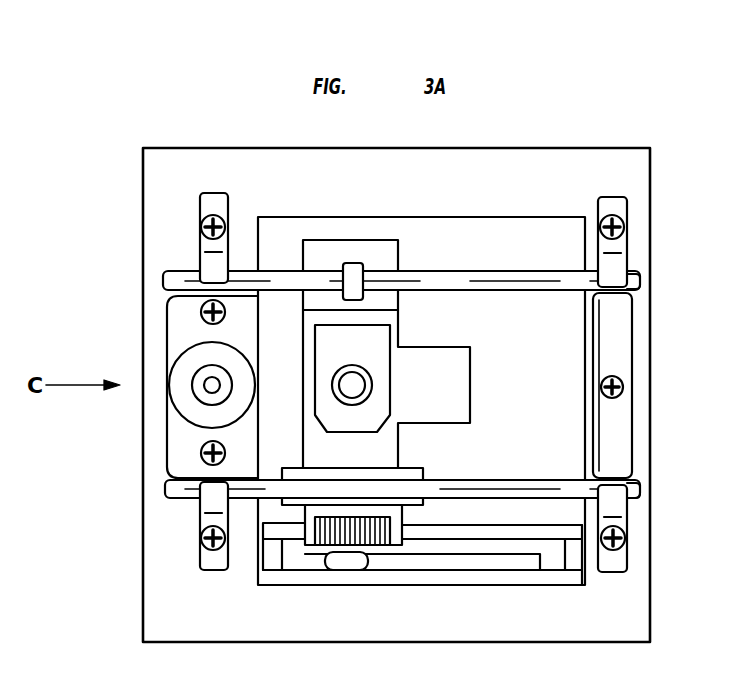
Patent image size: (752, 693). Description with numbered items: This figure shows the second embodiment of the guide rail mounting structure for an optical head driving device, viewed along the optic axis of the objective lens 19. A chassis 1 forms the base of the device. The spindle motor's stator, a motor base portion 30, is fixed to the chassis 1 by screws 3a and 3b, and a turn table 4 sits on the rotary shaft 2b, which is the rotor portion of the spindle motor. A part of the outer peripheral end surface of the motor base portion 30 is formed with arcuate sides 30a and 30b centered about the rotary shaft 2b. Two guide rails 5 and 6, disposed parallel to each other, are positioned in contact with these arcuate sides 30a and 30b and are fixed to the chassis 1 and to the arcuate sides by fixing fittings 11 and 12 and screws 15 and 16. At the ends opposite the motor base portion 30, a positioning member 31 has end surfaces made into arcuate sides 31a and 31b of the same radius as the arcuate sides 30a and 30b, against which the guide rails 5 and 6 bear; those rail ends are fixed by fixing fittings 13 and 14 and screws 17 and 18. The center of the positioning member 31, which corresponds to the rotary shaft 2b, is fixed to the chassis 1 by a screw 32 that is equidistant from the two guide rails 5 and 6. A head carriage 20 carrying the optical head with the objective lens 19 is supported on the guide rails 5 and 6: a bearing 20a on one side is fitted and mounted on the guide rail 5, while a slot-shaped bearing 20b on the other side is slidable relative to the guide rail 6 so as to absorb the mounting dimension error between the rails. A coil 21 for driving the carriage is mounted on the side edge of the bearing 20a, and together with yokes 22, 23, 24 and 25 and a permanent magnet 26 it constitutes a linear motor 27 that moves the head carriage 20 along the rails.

The chassis 1 is at (143, 629).
The rotary shaft 2b is at (205, 393).
The screw 3a is at (207, 462).
The screw 3b is at (230, 303).
The turn table 4 is at (196, 385).
The guide rail 5 is at (467, 493).
The guide rail 6 is at (525, 277).
The fixing fitting 11 is at (203, 553).
The fixing fitting 12 is at (213, 196).
The fixing fitting 13 is at (620, 510).
The fixing fitting 14 is at (619, 268).
The screw 15 is at (216, 552).
The screw 16 is at (200, 215).
The screw 17 is at (620, 552).
The screw 18 is at (623, 217).
The objective lens 19 is at (358, 388).
The head carriage 20 is at (393, 300).
The bearing 20a is at (340, 493).
The bearing 20b is at (350, 272).
The coil 21 is at (370, 550).
The yoke 22 is at (272, 568).
The yoke 23 is at (520, 535).
The yoke 24 is at (573, 565).
The yoke 25 is at (550, 580).
The permanent magnet 26 is at (492, 567).
The linear motor 27 is at (413, 568).
The motor base portion 30 is at (167, 338).
The arcuate side 30a is at (167, 470).
The arcuate side 30b is at (167, 300).
The positioning member 31 is at (623, 340).
The arcuate side 31a is at (620, 477).
The arcuate side 31b is at (627, 300).
The screw 32 is at (622, 390).